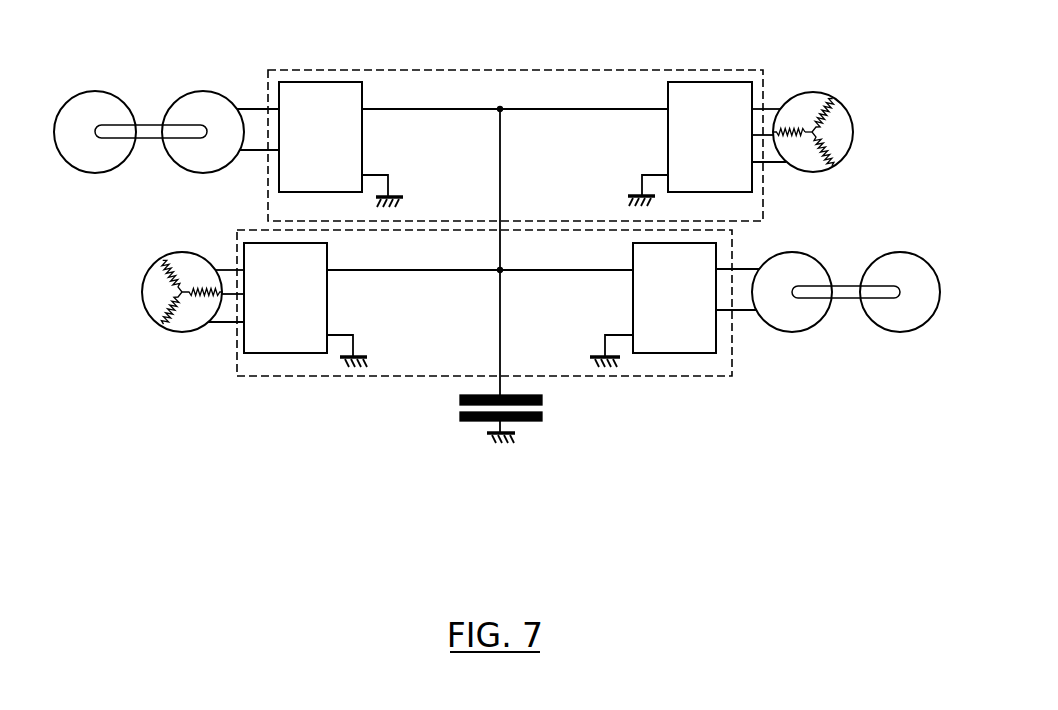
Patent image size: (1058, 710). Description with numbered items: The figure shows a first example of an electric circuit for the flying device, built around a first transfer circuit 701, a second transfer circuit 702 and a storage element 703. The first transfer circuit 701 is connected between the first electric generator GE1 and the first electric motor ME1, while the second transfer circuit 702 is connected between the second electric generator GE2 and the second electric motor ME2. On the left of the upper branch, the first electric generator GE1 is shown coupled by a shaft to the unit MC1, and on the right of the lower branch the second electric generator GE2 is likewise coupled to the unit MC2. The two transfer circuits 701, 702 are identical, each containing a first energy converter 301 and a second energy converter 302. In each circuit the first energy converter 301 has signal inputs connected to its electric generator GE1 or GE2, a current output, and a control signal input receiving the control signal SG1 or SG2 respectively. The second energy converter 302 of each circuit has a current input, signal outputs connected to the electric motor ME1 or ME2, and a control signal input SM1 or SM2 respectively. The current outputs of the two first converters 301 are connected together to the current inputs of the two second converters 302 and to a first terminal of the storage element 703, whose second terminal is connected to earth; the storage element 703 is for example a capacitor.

The first combustion engine MC1 is at (78, 173).
The first electric generator GE1 is at (183, 172).
The control signal SG1 is at (319, 80).
The control signal input SM1 is at (709, 80).
The control signal SG2 is at (284, 355).
The control signal input SM2 is at (675, 355).
The first transfer circuit 701 is at (440, 70).
The second transfer circuit 702 is at (380, 377).
The first energy converter 301 is at (362, 150).
The second energy converter 302 is at (668, 137).
The first electric motor ME1 is at (848, 158).
The second electric motor ME2 is at (145, 312).
The storage element 703 is at (460, 417).
The second electric generator GE2 is at (817, 327).
The second combustion engine MC2 is at (912, 332).